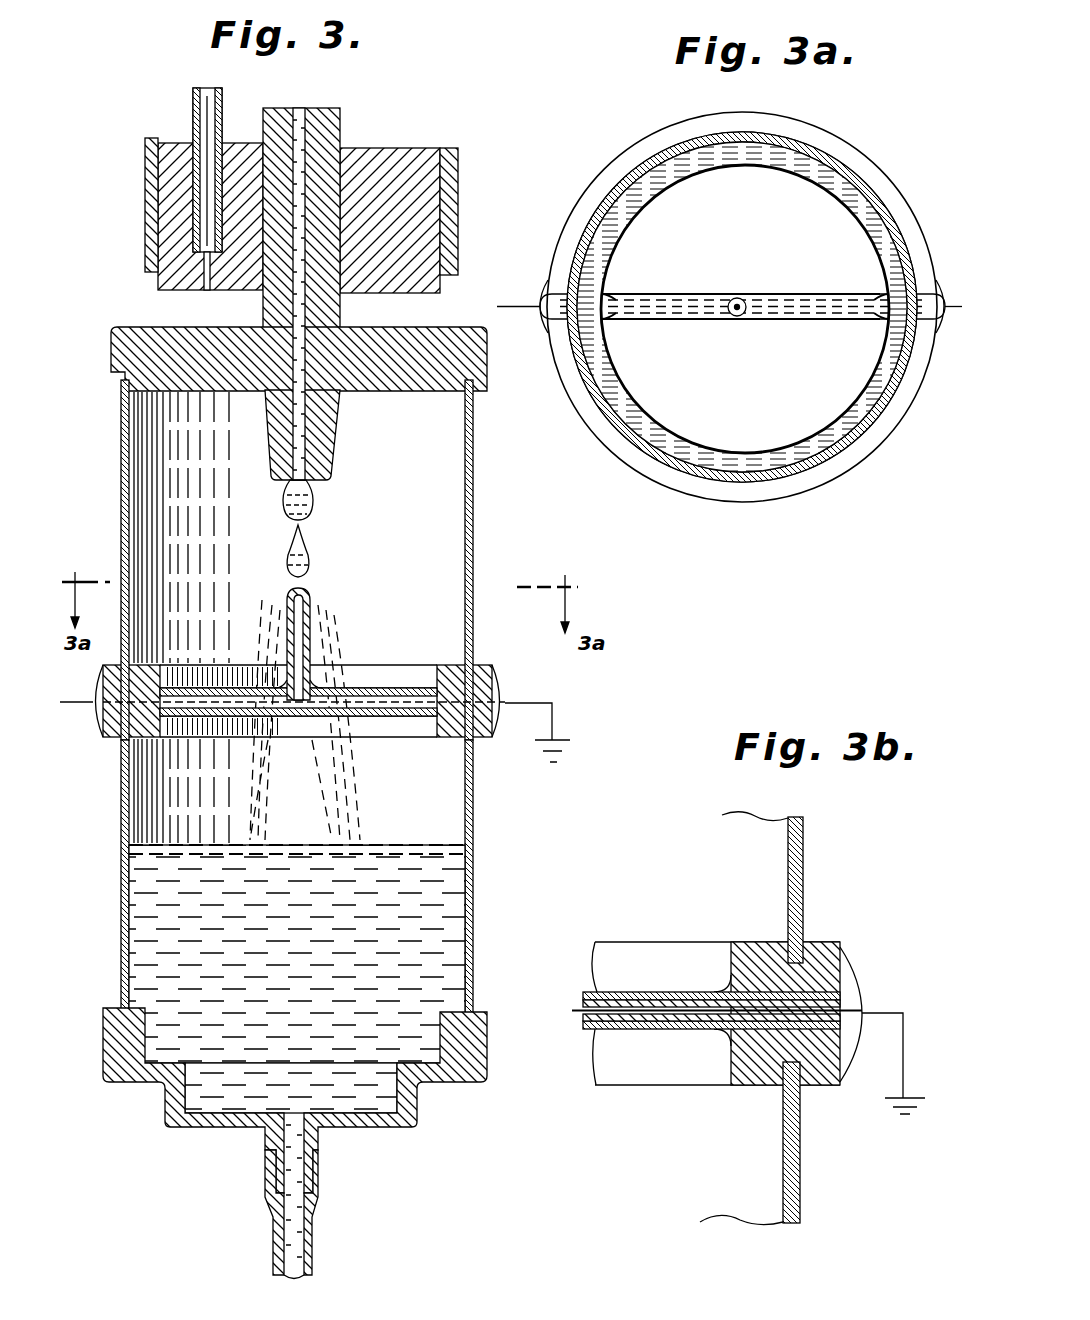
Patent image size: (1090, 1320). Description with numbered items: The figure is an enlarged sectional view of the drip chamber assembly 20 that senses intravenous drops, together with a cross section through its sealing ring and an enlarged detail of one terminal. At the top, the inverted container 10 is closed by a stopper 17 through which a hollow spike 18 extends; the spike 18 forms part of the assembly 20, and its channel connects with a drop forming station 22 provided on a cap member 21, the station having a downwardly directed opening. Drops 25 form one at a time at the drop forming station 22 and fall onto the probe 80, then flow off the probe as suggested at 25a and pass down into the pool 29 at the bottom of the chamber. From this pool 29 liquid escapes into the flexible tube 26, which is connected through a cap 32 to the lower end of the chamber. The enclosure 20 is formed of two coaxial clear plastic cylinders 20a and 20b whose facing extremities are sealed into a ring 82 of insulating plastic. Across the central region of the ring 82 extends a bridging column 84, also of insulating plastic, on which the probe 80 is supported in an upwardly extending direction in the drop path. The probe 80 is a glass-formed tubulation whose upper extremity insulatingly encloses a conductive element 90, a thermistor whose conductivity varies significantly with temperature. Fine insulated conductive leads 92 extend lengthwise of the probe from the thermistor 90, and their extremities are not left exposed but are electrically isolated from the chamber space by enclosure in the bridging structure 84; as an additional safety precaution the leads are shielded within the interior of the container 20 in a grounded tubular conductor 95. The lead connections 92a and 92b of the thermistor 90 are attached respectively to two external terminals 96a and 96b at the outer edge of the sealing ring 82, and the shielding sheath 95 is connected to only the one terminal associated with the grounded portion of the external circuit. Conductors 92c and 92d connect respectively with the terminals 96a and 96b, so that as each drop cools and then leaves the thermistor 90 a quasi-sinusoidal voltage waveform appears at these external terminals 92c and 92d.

In FIG. 3, the container 10 is at (148, 196).
In FIG. 3, the stopper 17 is at (405, 152).
In FIG. 3, the hollow spike 18 is at (330, 130).
In FIG. 3, the drip chamber assembly 20 is at (317, 698).
In FIG. 3, the coaxial cylinder 20a is at (478, 500).
In FIG. 3A, the coaxial cylinder 20a is at (820, 168).
In FIG. 3B, the coaxial cylinder 20a is at (805, 856).
In FIG. 3, the coaxial cylinder 20b is at (120, 862).
In FIG. 3B, the coaxial cylinder 20b is at (802, 1188).
In FIG. 3, the cap member 21 is at (115, 345).
In FIG. 3, the drop forming station 22 is at (340, 456).
In FIG. 3, the drops 25 is at (312, 553).
In FIG. 3, the drop flow-off 25a is at (334, 812).
In FIG. 3, the flexible tube 26 is at (318, 1260).
In FIG. 3, the pool 29 is at (430, 934).
In FIG. 3, the cap 32 is at (122, 1055).
In FIG. 3, the probe 80 is at (278, 618).
In FIG. 3A, the probe 80 is at (741, 327).
In FIG. 3, the ring of insulating plastic material 82 is at (485, 745).
In FIG. 3A, the ring of insulating plastic material 82 is at (710, 490).
In FIG. 3B, the ring of insulating plastic material 82 is at (662, 1030).
In FIG. 3, the bridging column 84 is at (187, 737).
In FIG. 3A, the bridging column 84 is at (655, 296).
In FIG. 3, the conductive element 90 is at (310, 598).
In FIG. 3A, the conductive element 90 is at (726, 300).
In FIG. 3, the conductive leads 92 is at (308, 652).
In FIG. 3A, the conductive leads 92 is at (742, 306).
In FIG. 3, the lead connection 92a is at (203, 700).
In FIG. 3A, the lead connection 92a is at (667, 320).
In FIG. 3, the lead connection 92b is at (393, 700).
In FIG. 3A, the lead connection 92b is at (797, 300).
In FIG. 3B, the lead connection 92b is at (583, 1030).
In FIG. 3, the conductor 92c is at (95, 700).
In FIG. 3A, the conductor 92c is at (545, 318).
In FIG. 3, the conductor 92d is at (540, 700).
In FIG. 3A, the conductor 92d is at (950, 300).
In FIG. 3B, the conductor 92d is at (885, 1010).
In FIG. 3, the grounded tubular conductor 95 is at (130, 672).
In FIG. 3A, the grounded tubular conductor 95 is at (661, 243).
In FIG. 3B, the grounded tubular conductor 95 is at (655, 990).
In FIG. 3, the external terminal 96a is at (100, 718).
In FIG. 3A, the external terminal 96a is at (538, 272).
In FIG. 3, the external terminal 96b is at (497, 686).
In FIG. 3A, the external terminal 96b is at (938, 385).
In FIG. 3B, the external terminal 96b is at (865, 977).